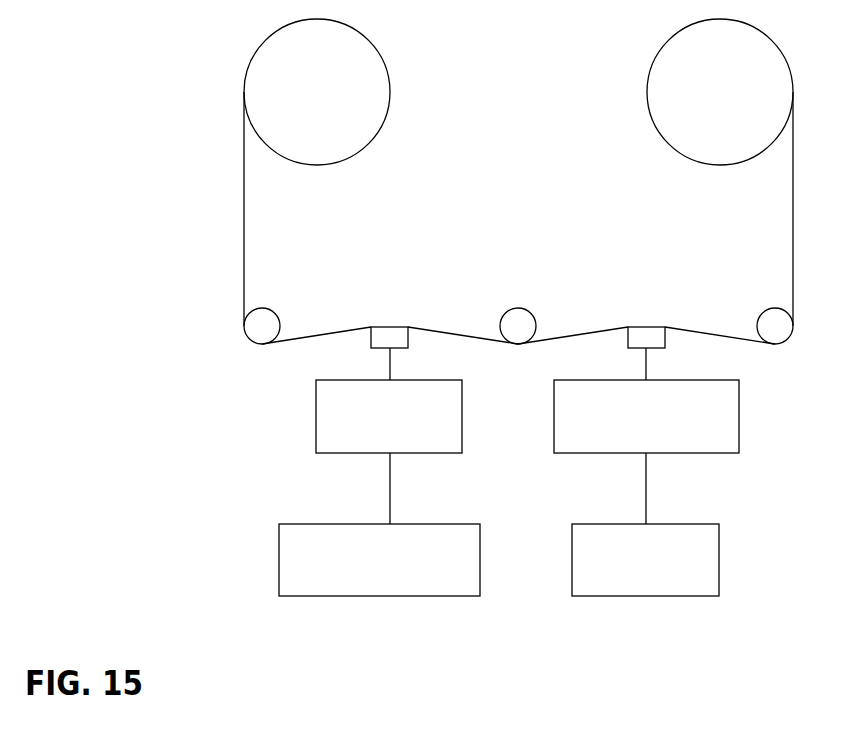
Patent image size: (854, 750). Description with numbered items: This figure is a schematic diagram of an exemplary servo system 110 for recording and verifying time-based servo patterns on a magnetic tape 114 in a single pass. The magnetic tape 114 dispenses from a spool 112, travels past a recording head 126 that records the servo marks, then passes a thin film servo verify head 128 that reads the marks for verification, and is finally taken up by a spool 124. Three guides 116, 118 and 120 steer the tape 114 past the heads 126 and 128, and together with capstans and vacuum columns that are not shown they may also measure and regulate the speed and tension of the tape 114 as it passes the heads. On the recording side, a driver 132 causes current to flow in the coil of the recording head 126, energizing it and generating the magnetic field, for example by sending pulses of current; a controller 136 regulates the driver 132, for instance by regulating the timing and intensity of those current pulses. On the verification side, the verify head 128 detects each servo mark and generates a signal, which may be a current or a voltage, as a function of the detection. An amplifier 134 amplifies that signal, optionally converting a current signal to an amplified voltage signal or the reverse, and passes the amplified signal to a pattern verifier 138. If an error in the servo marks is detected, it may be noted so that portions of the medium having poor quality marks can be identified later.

The servo system 110 is at (203, 43).
The spool 112 is at (390, 92).
The magnetic tape 114 is at (244, 218).
The guide 116 is at (276, 312).
The guide 118 is at (532, 312).
The guide 120 is at (761, 312).
The spool 124 is at (647, 90).
The recording head 126 is at (408, 342).
The thin film servo verify head 128 is at (665, 342).
The driver 132 is at (316, 414).
The amplifier 134 is at (554, 442).
The controller 136 is at (279, 559).
The pattern verifier 138 is at (572, 558).